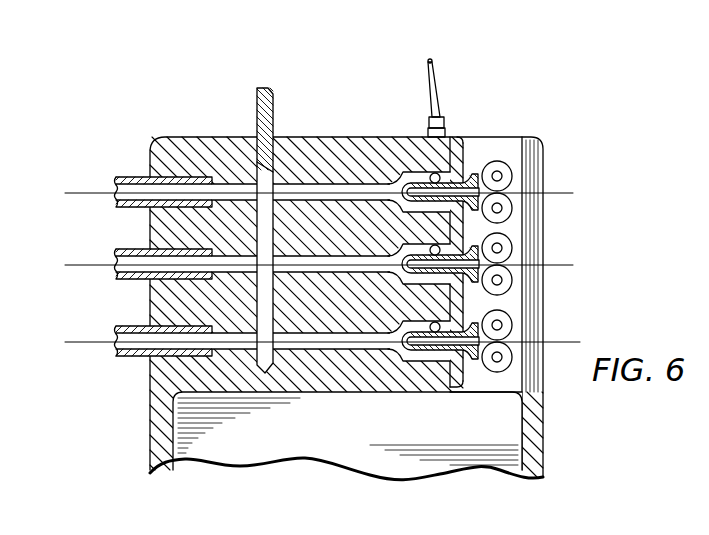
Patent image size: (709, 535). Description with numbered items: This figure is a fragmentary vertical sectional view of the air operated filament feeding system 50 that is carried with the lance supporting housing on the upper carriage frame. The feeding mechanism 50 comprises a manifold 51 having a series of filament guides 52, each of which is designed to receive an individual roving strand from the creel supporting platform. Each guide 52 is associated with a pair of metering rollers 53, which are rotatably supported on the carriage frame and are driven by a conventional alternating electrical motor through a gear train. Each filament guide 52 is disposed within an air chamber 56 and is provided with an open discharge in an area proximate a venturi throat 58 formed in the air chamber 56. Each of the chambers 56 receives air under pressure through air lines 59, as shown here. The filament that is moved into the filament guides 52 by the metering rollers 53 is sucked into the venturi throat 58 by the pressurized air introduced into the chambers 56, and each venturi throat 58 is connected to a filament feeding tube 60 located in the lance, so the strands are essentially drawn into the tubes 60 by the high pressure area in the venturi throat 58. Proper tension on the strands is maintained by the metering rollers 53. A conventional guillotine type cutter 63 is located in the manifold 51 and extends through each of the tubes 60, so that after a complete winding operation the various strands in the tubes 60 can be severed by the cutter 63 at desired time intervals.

The filament feeding system 50 is at (550, 246).
The manifold 51 is at (325, 137).
The filament guide 52 is at (417, 254).
The metering rollers 53 is at (511, 242).
The air chamber 56 is at (397, 202).
The venturi throat 58 is at (400, 171).
The air lines 59 is at (431, 174).
The filament feeding tube 60 is at (131, 281).
The guillotine type cutter 63 is at (257, 121).